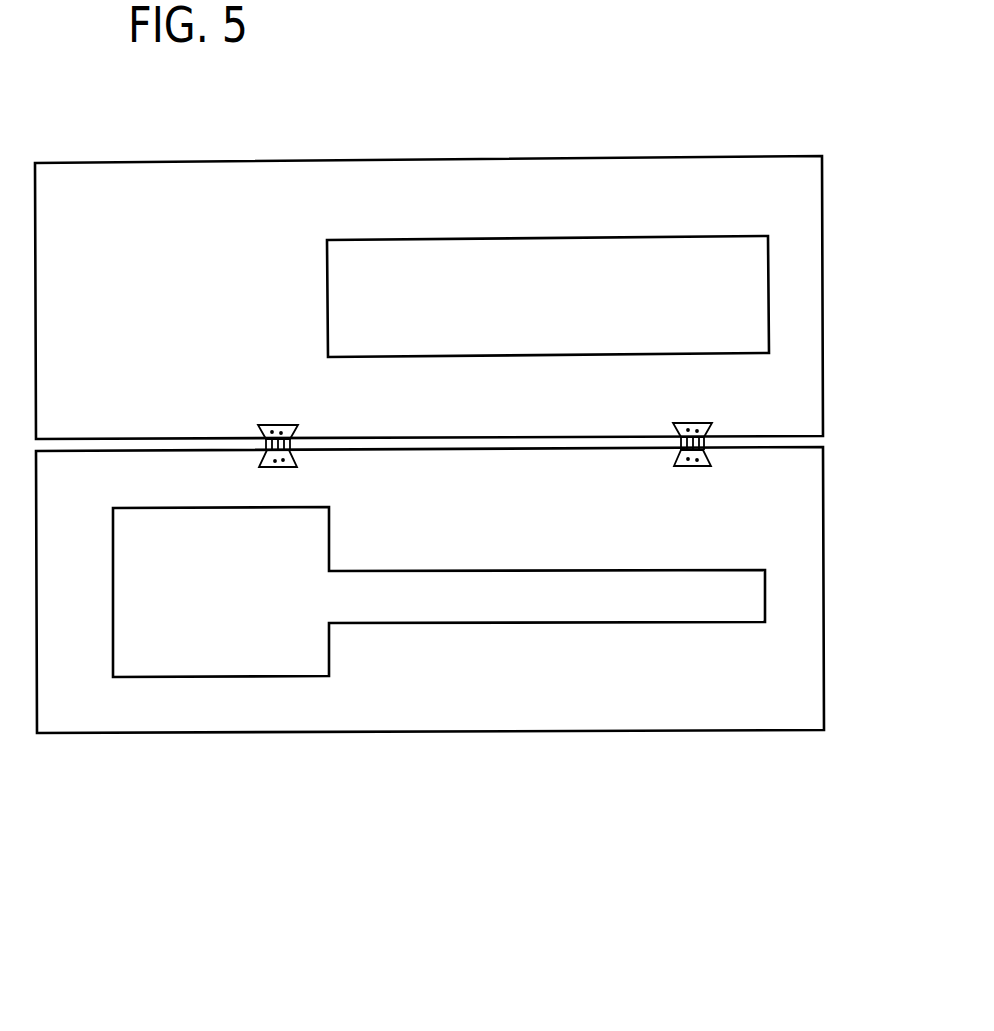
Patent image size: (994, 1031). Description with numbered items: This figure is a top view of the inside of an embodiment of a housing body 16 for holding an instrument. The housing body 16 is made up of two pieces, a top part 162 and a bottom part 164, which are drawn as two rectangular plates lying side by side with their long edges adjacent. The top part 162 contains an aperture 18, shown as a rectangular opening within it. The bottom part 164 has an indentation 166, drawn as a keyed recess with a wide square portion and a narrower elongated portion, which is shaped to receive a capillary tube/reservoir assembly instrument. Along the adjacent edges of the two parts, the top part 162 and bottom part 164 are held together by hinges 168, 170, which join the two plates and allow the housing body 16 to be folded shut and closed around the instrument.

The housing body 16 is at (444, 872).
The aperture 18 is at (758, 296).
The top part 162 is at (169, 248).
The bottom part 164 is at (506, 503).
The indentation 166 is at (178, 653).
The hinge 168 is at (705, 423).
The hinge 170 is at (268, 424).